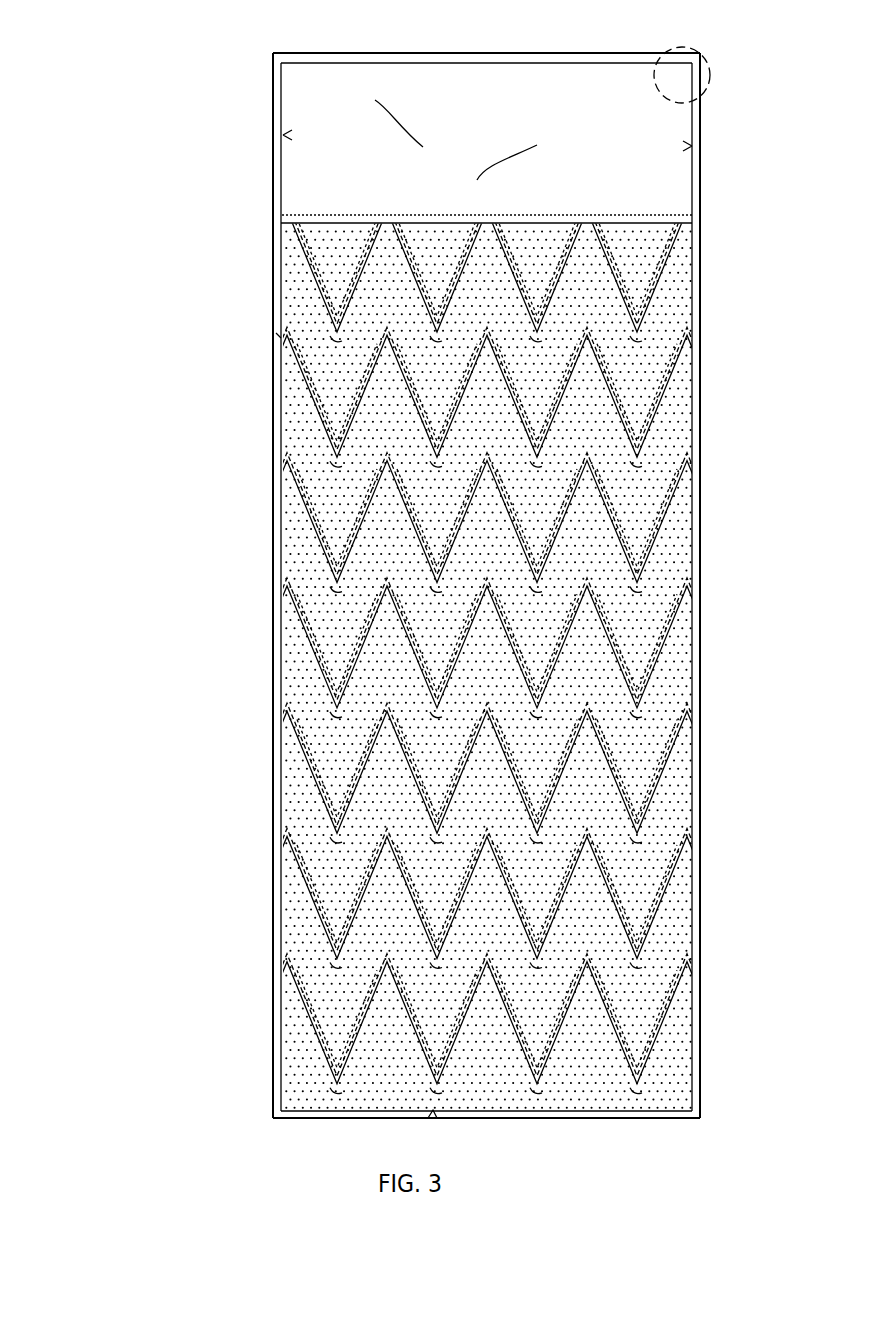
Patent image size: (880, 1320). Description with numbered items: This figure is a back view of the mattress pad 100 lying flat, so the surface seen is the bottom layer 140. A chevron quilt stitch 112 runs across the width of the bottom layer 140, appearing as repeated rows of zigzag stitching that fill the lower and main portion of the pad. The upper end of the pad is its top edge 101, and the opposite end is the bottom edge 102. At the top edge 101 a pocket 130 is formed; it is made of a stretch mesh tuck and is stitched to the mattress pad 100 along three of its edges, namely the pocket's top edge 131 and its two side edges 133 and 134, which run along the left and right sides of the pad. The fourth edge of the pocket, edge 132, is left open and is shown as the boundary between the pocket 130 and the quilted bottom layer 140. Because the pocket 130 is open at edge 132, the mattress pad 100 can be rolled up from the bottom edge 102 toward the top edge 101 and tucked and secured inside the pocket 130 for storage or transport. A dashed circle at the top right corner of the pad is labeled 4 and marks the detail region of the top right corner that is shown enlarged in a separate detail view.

The mattress pad 100 is at (157, 96).
The top edge 101 is at (303, 56).
The bottom edge 102 is at (305, 1119).
The detail circle for FIG. 4 is at (704, 78).
The top edge of pocket 131 is at (317, 74).
The open edge of pocket 132 is at (303, 215).
The side edge of pocket 133 is at (692, 121).
The side edge of pocket 134 is at (278, 162).
The pocket 130 is at (623, 174).
The bottom layer 140 is at (303, 318).
The chevron quilt stitch 112 is at (315, 398).